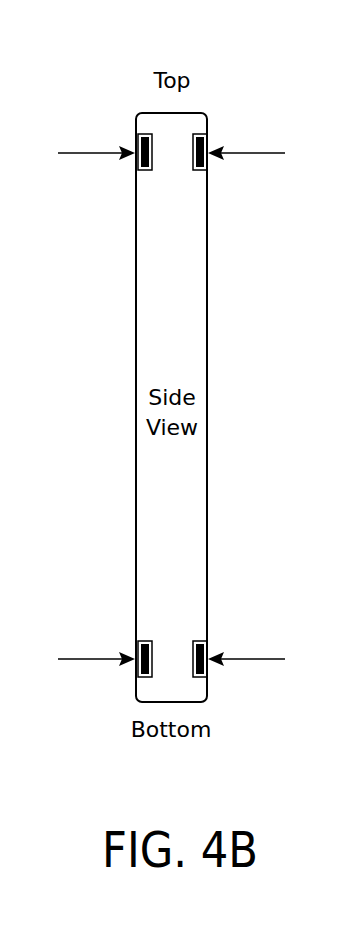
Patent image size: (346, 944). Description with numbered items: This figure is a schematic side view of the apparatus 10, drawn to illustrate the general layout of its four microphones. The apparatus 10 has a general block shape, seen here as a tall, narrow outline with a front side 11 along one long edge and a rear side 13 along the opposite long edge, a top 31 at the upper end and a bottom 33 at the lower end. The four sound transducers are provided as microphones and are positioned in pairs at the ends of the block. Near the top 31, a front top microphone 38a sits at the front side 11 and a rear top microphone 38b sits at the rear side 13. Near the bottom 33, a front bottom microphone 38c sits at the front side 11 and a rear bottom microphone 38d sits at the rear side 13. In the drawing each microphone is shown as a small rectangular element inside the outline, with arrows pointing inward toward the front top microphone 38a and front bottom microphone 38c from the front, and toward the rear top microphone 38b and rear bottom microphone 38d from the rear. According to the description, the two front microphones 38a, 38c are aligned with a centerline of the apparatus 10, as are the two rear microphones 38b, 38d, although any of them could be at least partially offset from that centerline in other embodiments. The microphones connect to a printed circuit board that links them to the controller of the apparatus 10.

The apparatus 10 is at (208, 251).
The front side 11 is at (135, 478).
The rear side 13 is at (208, 477).
The top 31 is at (199, 113).
The bottom 33 is at (194, 702).
The front top microphone 38a is at (138, 140).
The rear top microphone 38b is at (203, 140).
The front bottom microphone 38c is at (137, 647).
The rear bottom microphone 38d is at (207, 647).